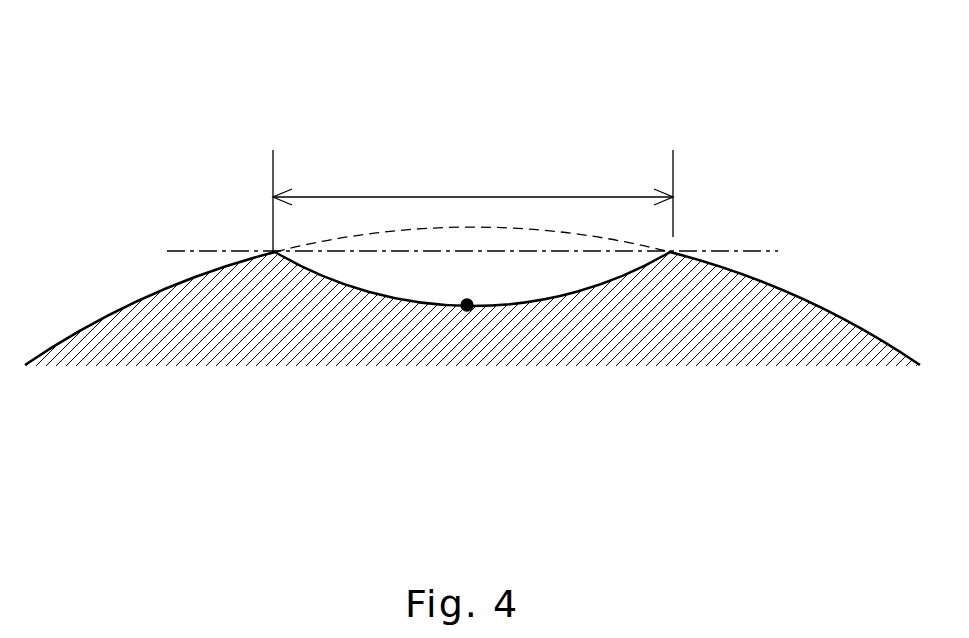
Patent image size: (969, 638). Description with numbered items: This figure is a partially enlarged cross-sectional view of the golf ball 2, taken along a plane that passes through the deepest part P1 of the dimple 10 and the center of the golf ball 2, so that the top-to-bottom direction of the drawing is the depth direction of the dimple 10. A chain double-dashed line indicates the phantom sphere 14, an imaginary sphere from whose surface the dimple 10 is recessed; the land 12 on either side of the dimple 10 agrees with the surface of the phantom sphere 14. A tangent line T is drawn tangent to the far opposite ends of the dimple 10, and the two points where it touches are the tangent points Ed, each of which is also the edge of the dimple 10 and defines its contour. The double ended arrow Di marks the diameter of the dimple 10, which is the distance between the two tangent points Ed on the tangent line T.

The golf ball 2 is at (484, 281).
The dimple 10 is at (392, 307).
The land 12 is at (812, 303).
The phantom sphere 14 is at (527, 228).
The tangent point Ed is at (277, 250).
The deepest part P1 is at (467, 300).
The tangent line T is at (202, 250).
The diameter Di is at (473, 201).